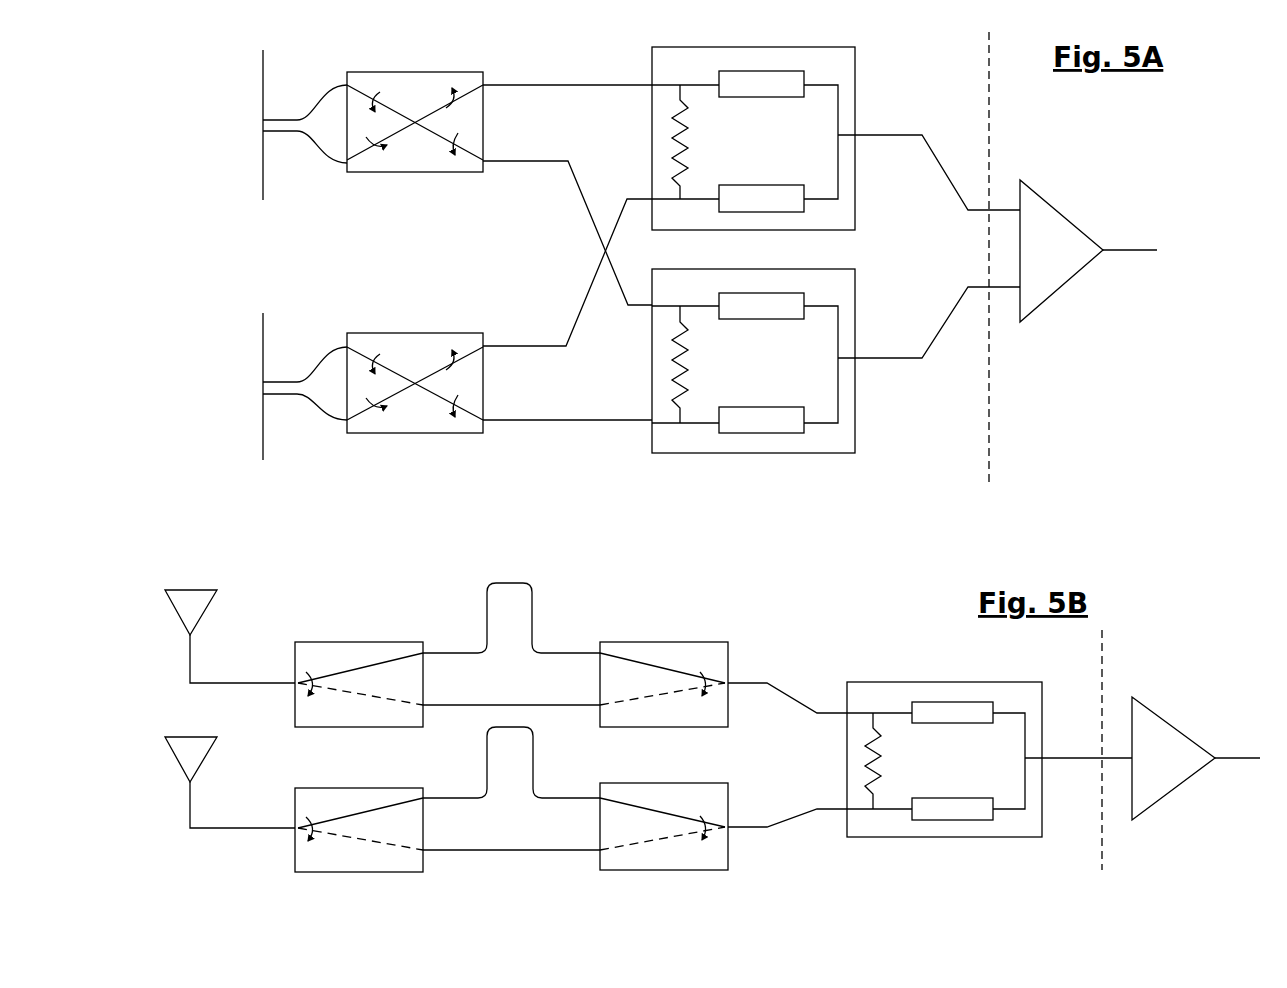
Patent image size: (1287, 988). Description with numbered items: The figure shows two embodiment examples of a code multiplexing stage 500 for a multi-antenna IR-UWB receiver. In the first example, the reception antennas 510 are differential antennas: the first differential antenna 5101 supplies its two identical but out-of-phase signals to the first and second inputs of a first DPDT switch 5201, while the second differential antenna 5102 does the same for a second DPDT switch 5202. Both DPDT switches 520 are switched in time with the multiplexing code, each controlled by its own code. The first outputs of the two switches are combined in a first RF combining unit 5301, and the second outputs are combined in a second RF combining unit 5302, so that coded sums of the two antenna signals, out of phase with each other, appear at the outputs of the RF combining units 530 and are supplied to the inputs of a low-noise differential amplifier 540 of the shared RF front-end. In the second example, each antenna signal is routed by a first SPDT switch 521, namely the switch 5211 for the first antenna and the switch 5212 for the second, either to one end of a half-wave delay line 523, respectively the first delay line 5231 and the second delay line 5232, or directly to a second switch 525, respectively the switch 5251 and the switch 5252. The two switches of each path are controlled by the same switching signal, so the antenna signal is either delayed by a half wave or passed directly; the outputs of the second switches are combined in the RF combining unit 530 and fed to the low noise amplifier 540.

In FIG. 5A, the code multiplexing stage 500 is at (233, 72).
In FIG. 5B, the code multiplexing stage 500 is at (158, 527).
In FIG. 5A, the reception antenna 510 is at (257, 255).
In FIG. 5B, the reception antenna 510 is at (201, 706).
In FIG. 5A, the first differential antenna 5101 is at (263, 150).
In FIG. 5B, the first differential antenna 5101 is at (178, 608).
In FIG. 5A, the second differential antenna 5102 is at (263, 410).
In FIG. 5B, the second differential antenna 5102 is at (178, 752).
In FIG. 5A, the DPDT switch 520 is at (499, 283).
In FIG. 5A, the first DPDT switch 5201 is at (390, 172).
In FIG. 5A, the second DPDT switch 5202 is at (388, 433).
In FIG. 5B, the first SPDT switch 521 is at (359, 766).
In FIG. 5B, the first SPDT switch of the first antenna 5211 is at (315, 643).
In FIG. 5B, the first SPDT switch of the second antenna 5212 is at (318, 873).
In FIG. 5B, the half-wave delay line 523 is at (511, 698).
In FIG. 5B, the first half-wave delay line 5231 is at (507, 582).
In FIG. 5B, the second half-wave delay line 5232 is at (511, 788).
In FIG. 5B, the second switch 525 is at (723, 765).
In FIG. 5B, the second switch of the first antenna 5251 is at (643, 640).
In FIG. 5B, the second switch of the second antenna 5252 is at (637, 870).
In FIG. 5A, the RF combining unit 530 is at (836, 260).
In FIG. 5B, the RF combining unit 530 is at (888, 680).
In FIG. 5A, the first RF combining unit 5301 is at (722, 47).
In FIG. 5A, the second RF combining unit 5302 is at (718, 453).
In FIG. 5A, the low-noise amplifier 540 is at (1040, 197).
In FIG. 5B, the low-noise amplifier 540 is at (1155, 708).